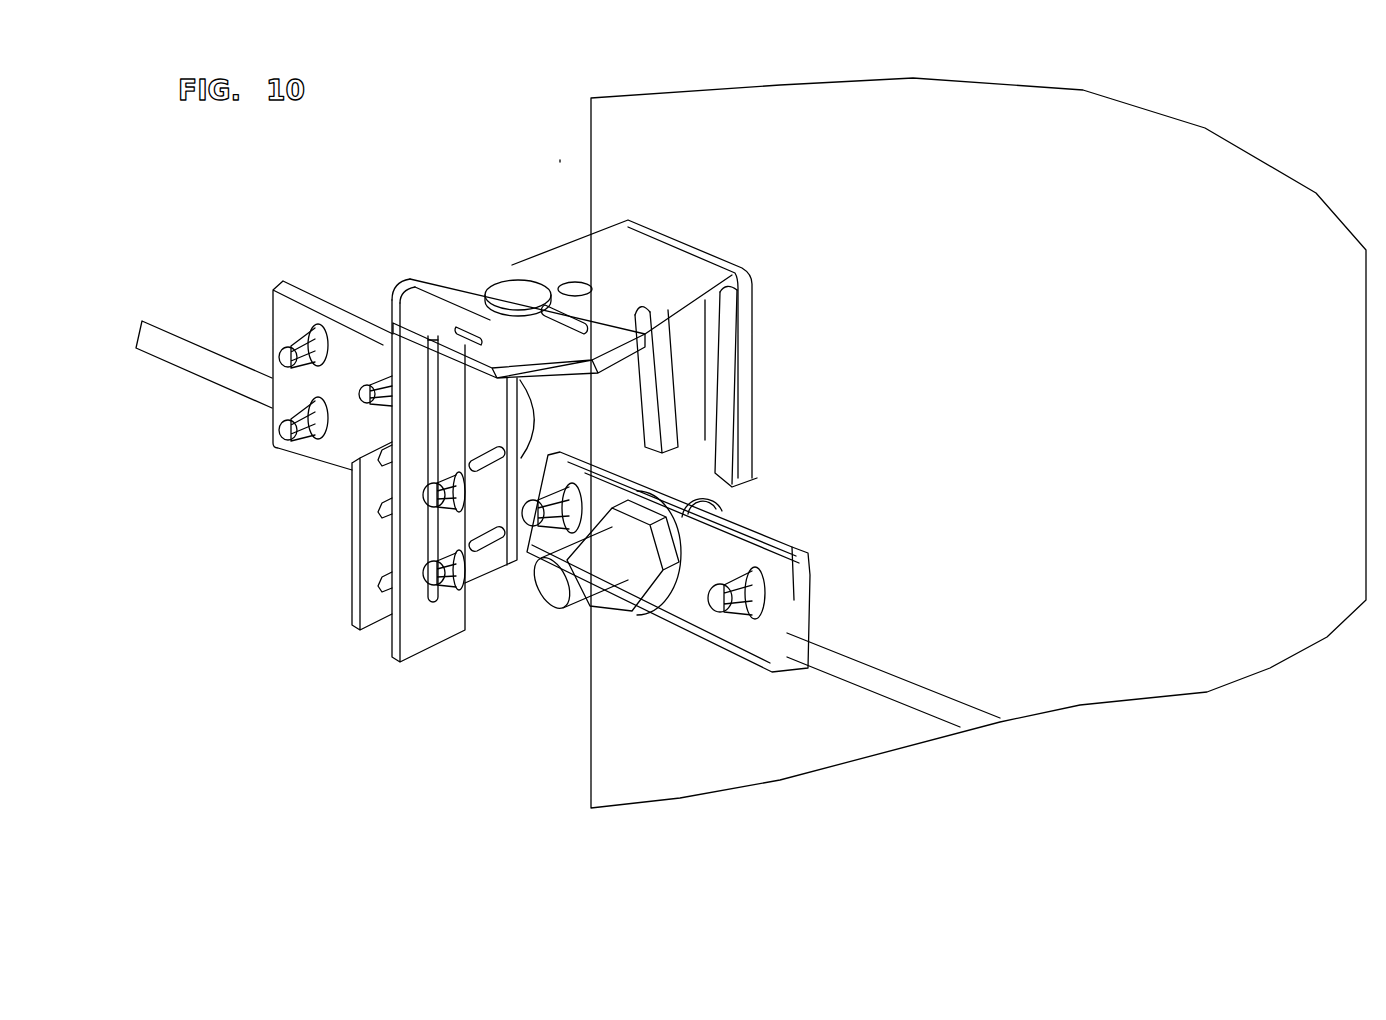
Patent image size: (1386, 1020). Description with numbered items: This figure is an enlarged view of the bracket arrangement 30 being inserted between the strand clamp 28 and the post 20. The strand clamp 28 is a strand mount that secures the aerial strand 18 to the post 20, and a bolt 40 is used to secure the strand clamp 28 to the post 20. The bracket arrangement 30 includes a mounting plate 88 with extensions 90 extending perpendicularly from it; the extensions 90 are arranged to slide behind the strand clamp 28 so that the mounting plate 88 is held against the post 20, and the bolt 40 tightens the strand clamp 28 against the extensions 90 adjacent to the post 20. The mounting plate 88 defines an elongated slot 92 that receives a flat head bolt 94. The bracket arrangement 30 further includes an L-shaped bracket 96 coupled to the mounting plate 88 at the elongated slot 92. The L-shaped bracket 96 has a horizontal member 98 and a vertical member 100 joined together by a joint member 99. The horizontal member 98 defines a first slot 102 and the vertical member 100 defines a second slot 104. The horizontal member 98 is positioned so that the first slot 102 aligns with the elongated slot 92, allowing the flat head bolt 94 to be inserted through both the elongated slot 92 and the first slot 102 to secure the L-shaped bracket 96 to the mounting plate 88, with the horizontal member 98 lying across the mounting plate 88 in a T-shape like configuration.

The aerial strand 18 is at (170, 345).
The post 20 is at (1120, 428).
The strand clamp 28 is at (710, 673).
The bracket arrangement 30 is at (572, 212).
The bolt 40 is at (580, 593).
The mounting plate 88 is at (676, 262).
The extensions 90 is at (653, 385).
The elongated slot 92 is at (570, 285).
The flat head bolt 94 is at (500, 290).
The L-shaped bracket 96 is at (378, 292).
The horizontal member 98 is at (580, 355).
The joint member 99 is at (405, 285).
The vertical member 100 is at (425, 637).
The first slot 102 is at (574, 328).
The second slot 104 is at (432, 600).